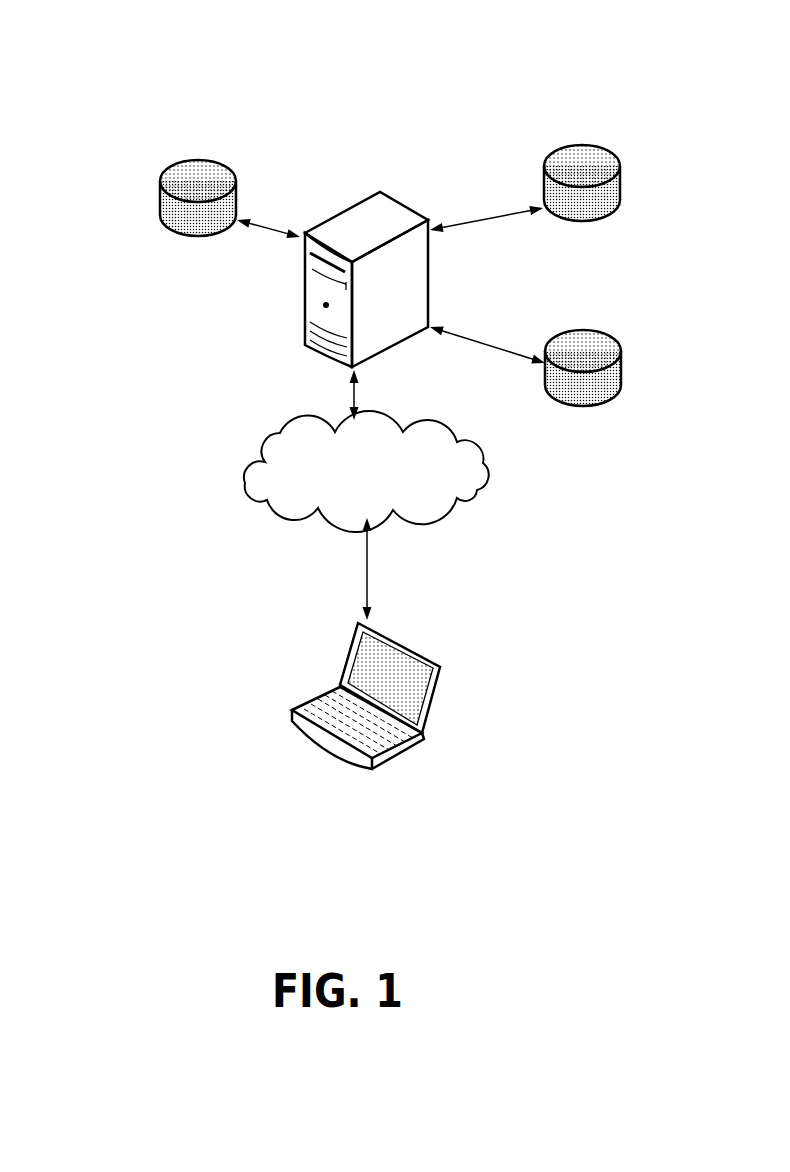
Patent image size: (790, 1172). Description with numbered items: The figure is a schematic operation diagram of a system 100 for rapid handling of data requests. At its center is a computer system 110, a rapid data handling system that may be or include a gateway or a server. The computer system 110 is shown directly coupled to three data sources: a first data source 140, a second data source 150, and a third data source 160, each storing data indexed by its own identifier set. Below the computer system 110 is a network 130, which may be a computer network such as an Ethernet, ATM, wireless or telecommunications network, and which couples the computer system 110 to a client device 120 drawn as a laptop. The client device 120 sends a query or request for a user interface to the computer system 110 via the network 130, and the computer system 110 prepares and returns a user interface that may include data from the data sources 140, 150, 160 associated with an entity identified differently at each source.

The system 100 is at (60, 93).
The computer system 110 is at (393, 209).
The client device 120 is at (290, 711).
The network 130 is at (385, 493).
The first data source 140 is at (158, 176).
The second data source 150 is at (621, 173).
The third data source 160 is at (622, 358).